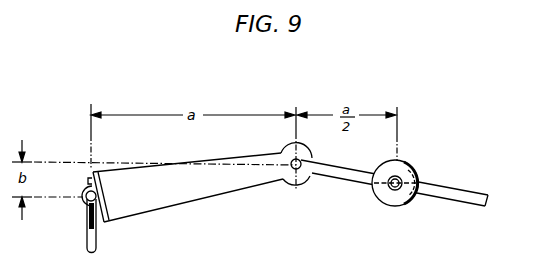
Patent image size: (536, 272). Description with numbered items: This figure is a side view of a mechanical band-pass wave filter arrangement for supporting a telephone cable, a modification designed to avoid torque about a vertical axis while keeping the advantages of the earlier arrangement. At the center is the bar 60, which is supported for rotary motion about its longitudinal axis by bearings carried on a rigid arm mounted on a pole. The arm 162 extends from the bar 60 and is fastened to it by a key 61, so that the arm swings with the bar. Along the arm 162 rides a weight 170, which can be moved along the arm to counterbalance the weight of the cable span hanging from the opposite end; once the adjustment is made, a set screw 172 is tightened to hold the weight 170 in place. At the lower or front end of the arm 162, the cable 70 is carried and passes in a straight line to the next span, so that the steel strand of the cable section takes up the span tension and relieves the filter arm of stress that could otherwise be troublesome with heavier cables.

The bar 60 is at (296, 181).
The key 61 is at (302, 162).
The cable 70 is at (95, 244).
The arm 162 is at (225, 193).
The weight 170 is at (419, 180).
The set screw 172 is at (402, 178).